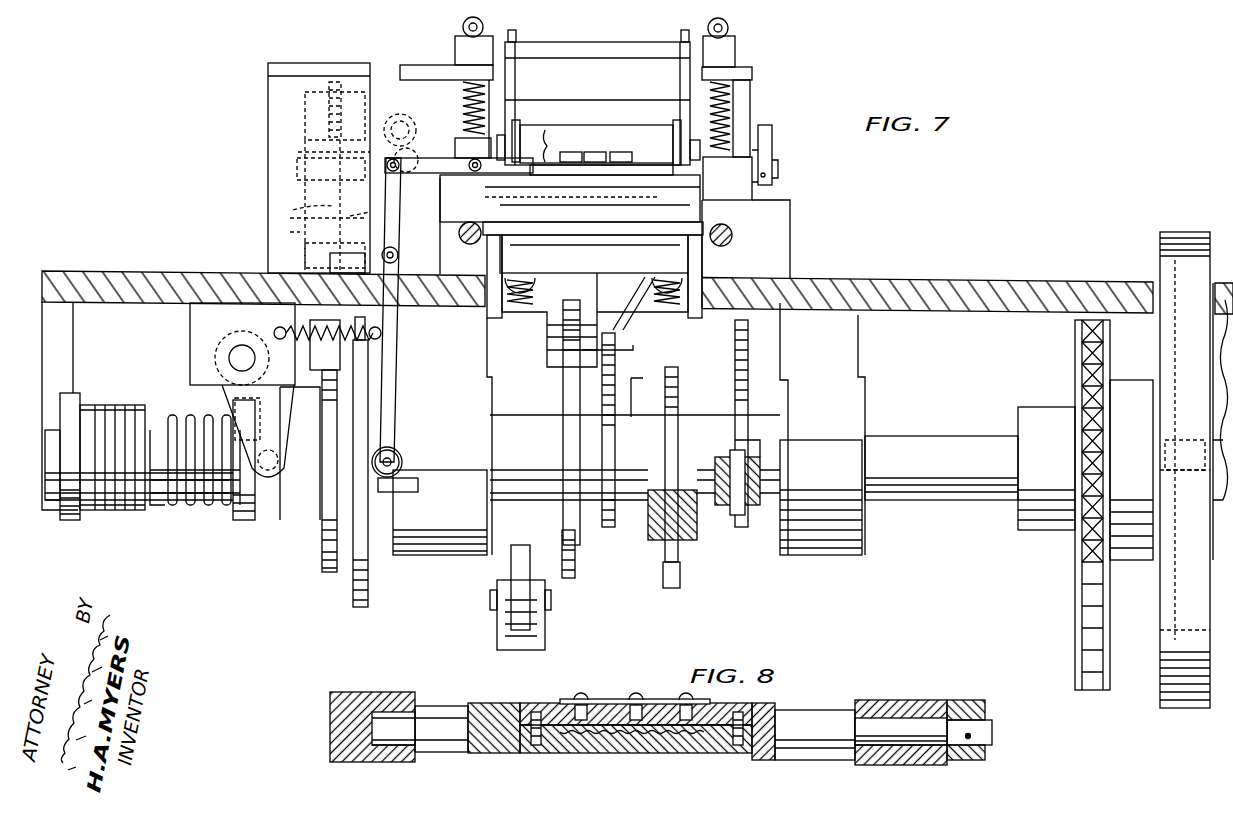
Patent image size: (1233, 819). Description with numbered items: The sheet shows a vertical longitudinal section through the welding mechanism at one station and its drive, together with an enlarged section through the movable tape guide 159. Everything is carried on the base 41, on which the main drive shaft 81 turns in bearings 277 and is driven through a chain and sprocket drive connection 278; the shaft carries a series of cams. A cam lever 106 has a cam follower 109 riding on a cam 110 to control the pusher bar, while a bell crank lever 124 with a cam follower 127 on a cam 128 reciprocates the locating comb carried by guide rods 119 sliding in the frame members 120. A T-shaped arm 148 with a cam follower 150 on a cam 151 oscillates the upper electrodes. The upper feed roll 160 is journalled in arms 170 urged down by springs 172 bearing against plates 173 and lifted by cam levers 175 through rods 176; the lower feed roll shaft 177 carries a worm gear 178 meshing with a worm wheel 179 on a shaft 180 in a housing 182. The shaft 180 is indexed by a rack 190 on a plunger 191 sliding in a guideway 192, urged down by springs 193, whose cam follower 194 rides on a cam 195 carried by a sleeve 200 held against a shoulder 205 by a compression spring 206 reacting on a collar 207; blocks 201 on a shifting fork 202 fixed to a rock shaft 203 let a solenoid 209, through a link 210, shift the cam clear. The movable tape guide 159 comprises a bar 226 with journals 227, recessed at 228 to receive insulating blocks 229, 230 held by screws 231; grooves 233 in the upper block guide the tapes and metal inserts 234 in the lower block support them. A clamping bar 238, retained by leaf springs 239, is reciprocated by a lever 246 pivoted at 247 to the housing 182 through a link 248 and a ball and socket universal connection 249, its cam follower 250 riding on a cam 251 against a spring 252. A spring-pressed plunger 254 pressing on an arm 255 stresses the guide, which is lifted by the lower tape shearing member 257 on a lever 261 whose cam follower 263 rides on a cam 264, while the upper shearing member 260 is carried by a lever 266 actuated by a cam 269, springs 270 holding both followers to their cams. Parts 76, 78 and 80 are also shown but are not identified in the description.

In FIG. 7, the base 41 is at (133, 278).
In FIG. 7, the side frame 76 is at (1196, 502).
In FIG. 7, the frame bearing 78 is at (1194, 440).
In FIG. 7, the gear 80 is at (1175, 232).
In FIG. 7, the main drive shaft 81 is at (62, 414).
In FIG. 7, the cam lever 106 is at (660, 540).
In FIG. 7, the cam follower 109 is at (678, 552).
In FIG. 7, the cam 110 is at (680, 576).
In FIG. 7, the guide rods 119 is at (469, 244).
In FIG. 7, the frame members 120 is at (454, 258).
In FIG. 8, the frame members 120 is at (338, 706).
In FIG. 7, the bell crank lever 124 is at (545, 630).
In FIG. 7, the cam follower 127 is at (503, 617).
In FIG. 7, the cam 128 is at (563, 542).
In FIG. 7, the T-shaped arm 148 is at (762, 469).
In FIG. 7, the cam follower 150 is at (746, 450).
In FIG. 7, the cam 151 is at (736, 358).
In FIG. 7, the movable tape guide 159 is at (630, 196).
In FIG. 8, the movable tape guide 159 is at (805, 763).
In FIG. 7, the upper feed roll 160 is at (653, 130).
In FIG. 7, the arms 170 is at (490, 108).
In FIG. 7, the springs 172 is at (735, 102).
In FIG. 7, the plates 173 is at (464, 67).
In FIG. 7, the cam levers 175 is at (485, 28).
In FIG. 7, the rods 176 is at (733, 122).
In FIG. 7, the shaft 177 is at (490, 212).
In FIG. 7, the worm gear 178 is at (370, 211).
In FIG. 7, the worm wheel 179 is at (316, 176).
In FIG. 7, the shaft 180 is at (330, 154).
In FIG. 7, the housing 182 is at (276, 105).
In FIG. 7, the rack 190 is at (404, 119).
In FIG. 7, the plunger 191 is at (300, 126).
In FIG. 7, the guideway 192 is at (290, 232).
In FIG. 7, the springs 193 is at (318, 80).
In FIG. 7, the cam follower 194 is at (326, 373).
In FIG. 7, the cam 195 is at (322, 572).
In FIG. 7, the sleeve 200 is at (322, 568).
In FIG. 7, the blocks 201 is at (266, 517).
In FIG. 7, the shifting fork 202 is at (278, 410).
In FIG. 7, the rock shaft 203 is at (229, 358).
In FIG. 7, the shoulder 205 is at (368, 554).
In FIG. 7, the compression spring 206 is at (165, 509).
In FIG. 7, the collar 207 is at (83, 399).
In FIG. 7, the solenoid 209 is at (110, 514).
In FIG. 7, the link 210 is at (215, 414).
In FIG. 7, the bar 226 is at (676, 180).
In FIG. 8, the bar 226 is at (491, 710).
In FIG. 8, the journals 227 is at (394, 759).
In FIG. 8, the recess 228 is at (777, 712).
In FIG. 8, the upper block 229 is at (548, 703).
In FIG. 8, the lower block 230 is at (590, 754).
In FIG. 8, the screws 231 is at (540, 750).
In FIG. 8, the grooves 233 is at (616, 705).
In FIG. 8, the metal inserts 234 is at (646, 756).
In FIG. 7, the clamping bar 238 is at (552, 134).
In FIG. 7, the leaf springs 239 is at (617, 150).
In FIG. 8, the leaf springs 239 is at (645, 703).
In FIG. 7, the lever 246 is at (382, 190).
In FIG. 7, the pivot 247 is at (355, 243).
In FIG. 7, the link 248 is at (410, 150).
In FIG. 7, the ball and socket universal connection 249 is at (459, 176).
In FIG. 7, the cam follower 250 is at (402, 452).
In FIG. 7, the cam 251 is at (398, 496).
In FIG. 7, the spring 252 is at (296, 324).
In FIG. 7, the spring-pressed plunger 254 is at (776, 143).
In FIG. 7, the arm 255 is at (776, 158).
In FIG. 8, the arm 255 is at (990, 719).
In FIG. 7, the tape shearing member 257 is at (492, 196).
In FIG. 7, the shearing member 260 is at (576, 96).
In FIG. 7, the lever 261 is at (700, 248).
In FIG. 7, the cam follower 263 is at (633, 350).
In FIG. 7, the cam 264 is at (578, 570).
In FIG. 7, the lever 266 is at (648, 45).
In FIG. 7, the cam 269 is at (602, 528).
In FIG. 7, the springs 270 is at (505, 302).
In FIG. 7, the bearings 277 is at (454, 558).
In FIG. 7, the chain and sprocket drive connection 278 is at (1073, 626).